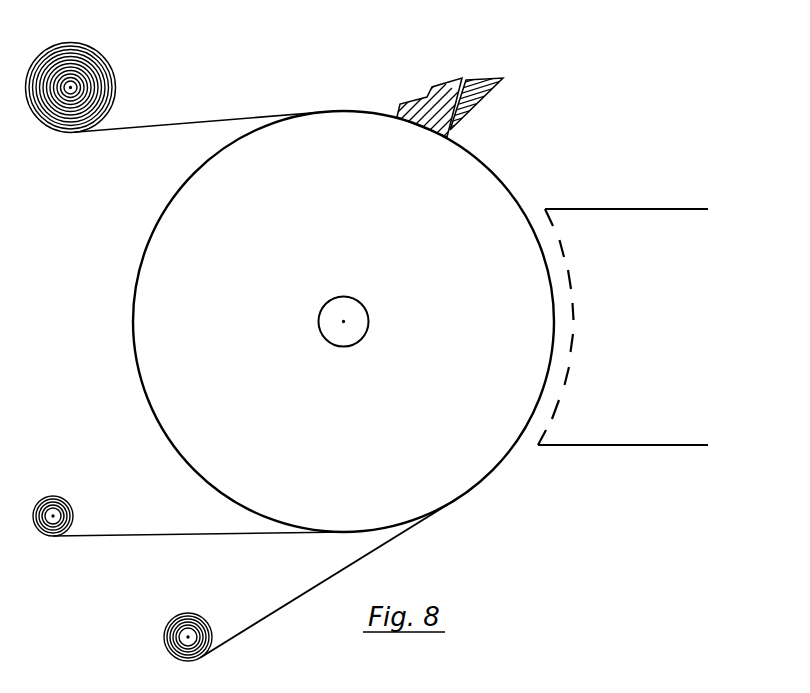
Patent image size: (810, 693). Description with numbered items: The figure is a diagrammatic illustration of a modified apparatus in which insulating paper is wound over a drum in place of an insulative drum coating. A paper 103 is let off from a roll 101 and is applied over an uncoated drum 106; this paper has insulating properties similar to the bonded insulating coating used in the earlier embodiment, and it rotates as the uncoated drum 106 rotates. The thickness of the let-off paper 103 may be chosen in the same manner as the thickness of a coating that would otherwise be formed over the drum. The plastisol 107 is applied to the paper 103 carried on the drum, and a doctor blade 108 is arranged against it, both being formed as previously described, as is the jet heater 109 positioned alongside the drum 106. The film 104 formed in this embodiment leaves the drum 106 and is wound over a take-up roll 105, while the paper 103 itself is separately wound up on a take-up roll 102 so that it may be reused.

The roll 101 is at (83, 51).
The take-up roll 102 is at (47, 505).
The paper 103 is at (202, 98).
The film 104 is at (261, 612).
The take-up roll 105 is at (185, 622).
The uncoated drum 106 is at (487, 455).
The plastisol 107 is at (434, 86).
The doctor blade 108 is at (480, 96).
The jet heater 109 is at (655, 192).